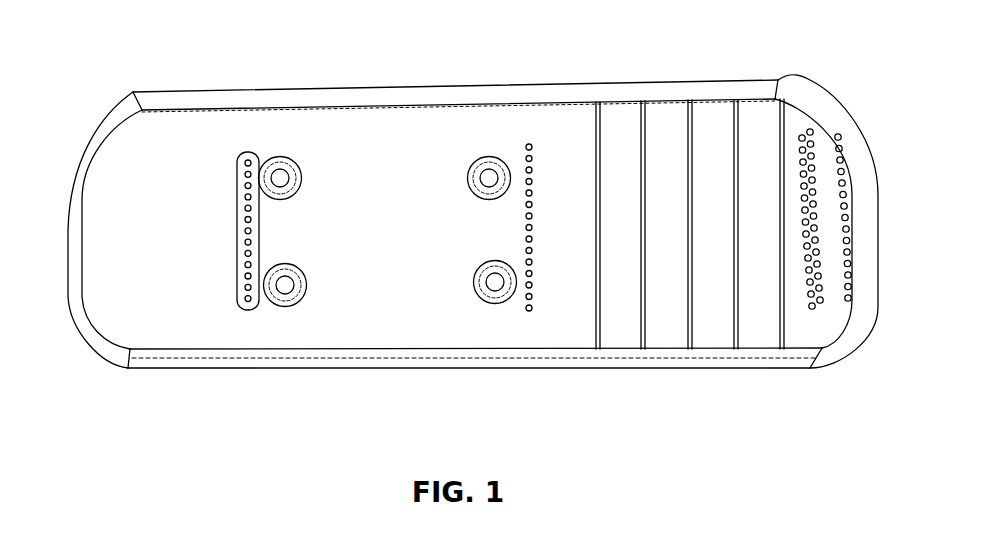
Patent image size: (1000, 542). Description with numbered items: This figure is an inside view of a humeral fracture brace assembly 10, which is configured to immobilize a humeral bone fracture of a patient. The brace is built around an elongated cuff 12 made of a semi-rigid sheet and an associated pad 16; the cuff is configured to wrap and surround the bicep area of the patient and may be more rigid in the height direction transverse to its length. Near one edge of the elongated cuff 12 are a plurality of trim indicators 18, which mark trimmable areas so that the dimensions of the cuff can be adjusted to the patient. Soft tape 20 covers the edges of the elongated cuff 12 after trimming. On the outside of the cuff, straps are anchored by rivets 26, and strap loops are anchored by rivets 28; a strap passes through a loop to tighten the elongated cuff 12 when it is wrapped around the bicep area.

The humeral fracture brace assembly 10 is at (187, 62).
The elongated cuff 12 is at (393, 290).
The pad 16 is at (200, 338).
The trim indicators 18 is at (692, 292).
The soft tape 20 is at (83, 142).
The rivets 26 is at (490, 160).
The rivets 28 is at (280, 158).